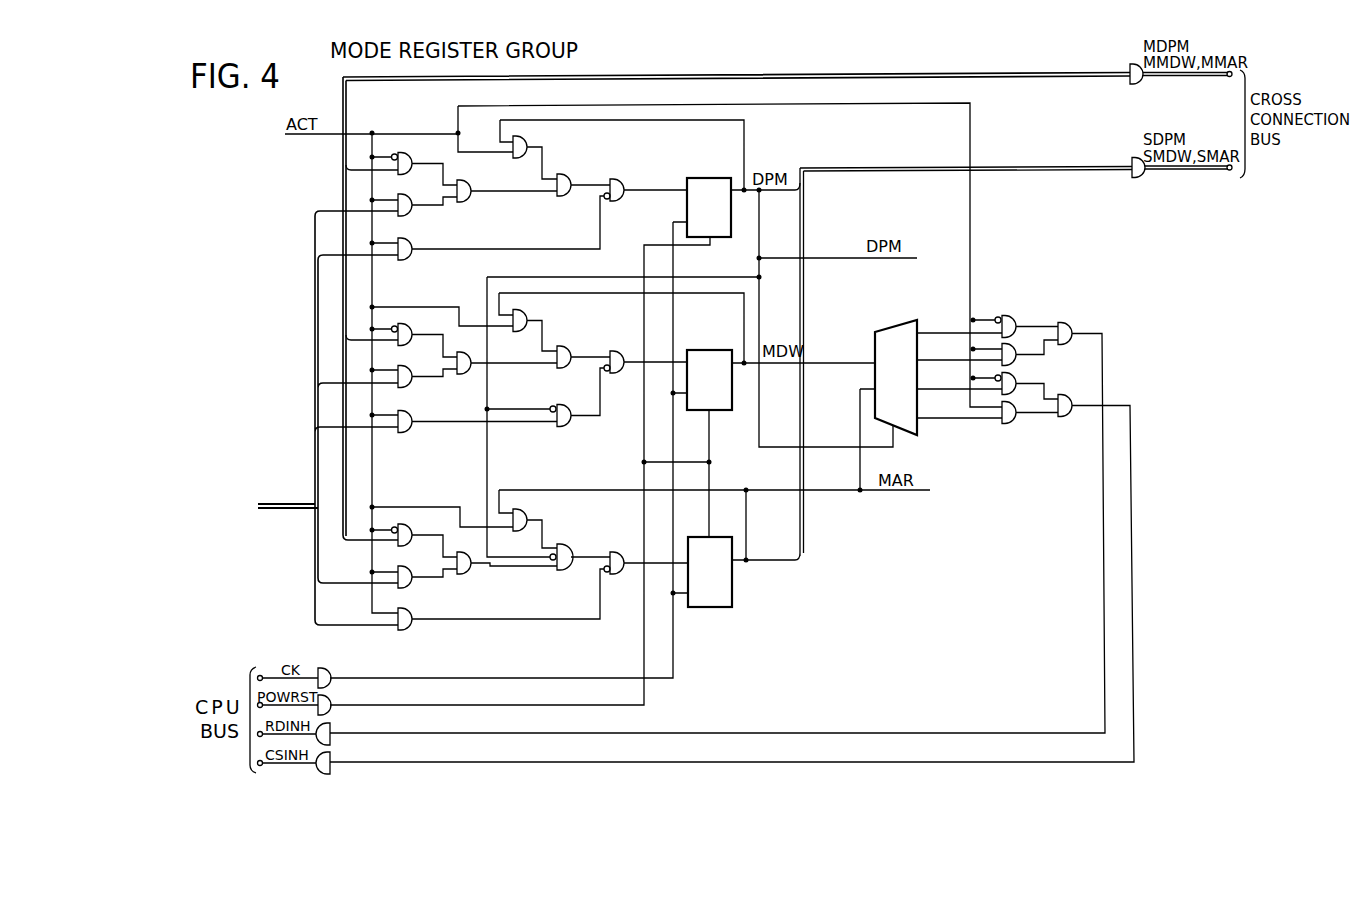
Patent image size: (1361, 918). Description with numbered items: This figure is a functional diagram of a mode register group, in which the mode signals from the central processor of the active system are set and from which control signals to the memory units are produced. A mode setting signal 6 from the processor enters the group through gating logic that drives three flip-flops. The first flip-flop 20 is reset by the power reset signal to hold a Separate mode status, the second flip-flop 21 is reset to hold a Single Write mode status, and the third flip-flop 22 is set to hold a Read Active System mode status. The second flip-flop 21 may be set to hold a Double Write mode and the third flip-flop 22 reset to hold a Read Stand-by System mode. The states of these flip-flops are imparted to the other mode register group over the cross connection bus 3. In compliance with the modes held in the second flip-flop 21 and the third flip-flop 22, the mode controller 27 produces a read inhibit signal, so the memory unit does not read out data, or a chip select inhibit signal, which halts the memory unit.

The cross connection bus 3 is at (1187, 132).
The mode setting signal 6 is at (248, 510).
The DPM flip-flop 20 is at (719, 240).
The MDW flip-flop 21 is at (723, 411).
The MAR flip-flop 22 is at (733, 586).
The MC 27 is at (921, 326).